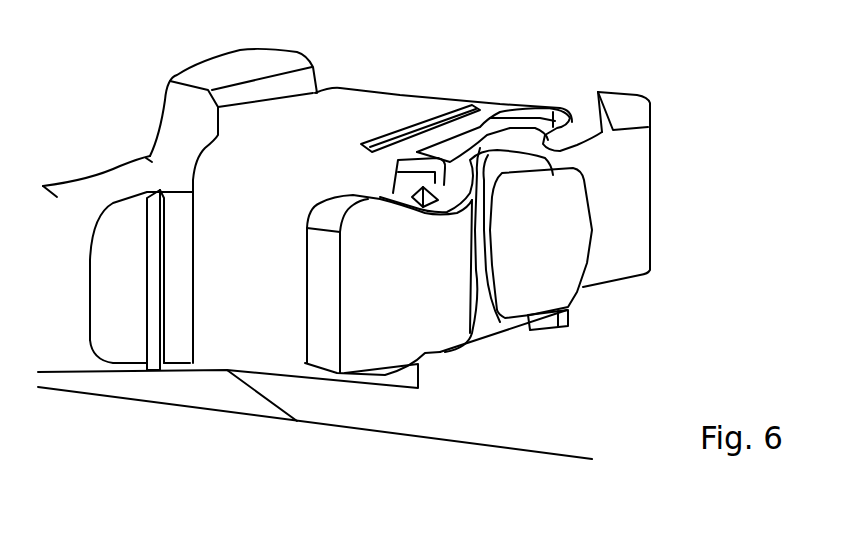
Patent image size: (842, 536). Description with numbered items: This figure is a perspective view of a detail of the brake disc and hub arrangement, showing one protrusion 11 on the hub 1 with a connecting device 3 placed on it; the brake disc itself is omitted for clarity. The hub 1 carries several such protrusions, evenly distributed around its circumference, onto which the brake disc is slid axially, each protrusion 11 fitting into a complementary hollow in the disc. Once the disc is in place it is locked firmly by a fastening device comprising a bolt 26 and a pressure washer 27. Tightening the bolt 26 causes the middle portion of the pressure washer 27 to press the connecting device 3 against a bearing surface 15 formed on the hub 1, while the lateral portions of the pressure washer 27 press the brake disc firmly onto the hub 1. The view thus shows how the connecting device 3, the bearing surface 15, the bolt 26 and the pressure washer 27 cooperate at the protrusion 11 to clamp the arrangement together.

The hub 1 is at (30, 292).
The connecting device 3 is at (377, 105).
The protrusion 11 is at (358, 406).
The bearing surface 15 is at (303, 84).
The bolt 26 is at (527, 295).
The pressure washer 27 is at (608, 260).